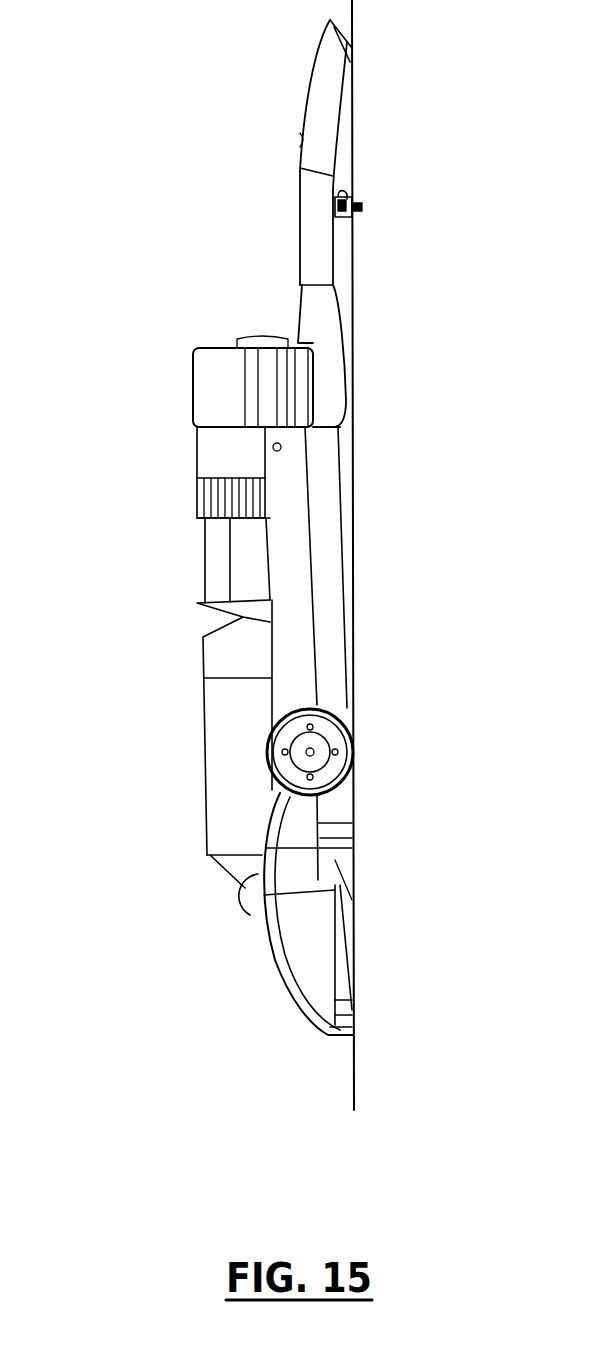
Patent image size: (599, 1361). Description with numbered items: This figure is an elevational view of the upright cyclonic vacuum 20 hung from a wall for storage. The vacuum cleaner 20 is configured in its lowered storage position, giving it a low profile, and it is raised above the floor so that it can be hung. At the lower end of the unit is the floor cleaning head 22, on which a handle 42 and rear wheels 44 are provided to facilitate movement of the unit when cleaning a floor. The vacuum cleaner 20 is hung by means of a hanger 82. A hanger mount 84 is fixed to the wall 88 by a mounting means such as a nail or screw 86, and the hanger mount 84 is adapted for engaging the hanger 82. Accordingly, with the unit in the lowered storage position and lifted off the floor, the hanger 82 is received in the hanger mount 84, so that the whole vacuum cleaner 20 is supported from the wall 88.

The upright cyclonic vacuum 20 is at (132, 472).
The floor cleaning head 22 is at (260, 976).
The handle 42 is at (318, 82).
The rear wheels 44 is at (345, 772).
The hanger 82 is at (341, 192).
The hanger mount 84 is at (350, 218).
The nail or screw 86 is at (360, 205).
The wall 88 is at (354, 309).